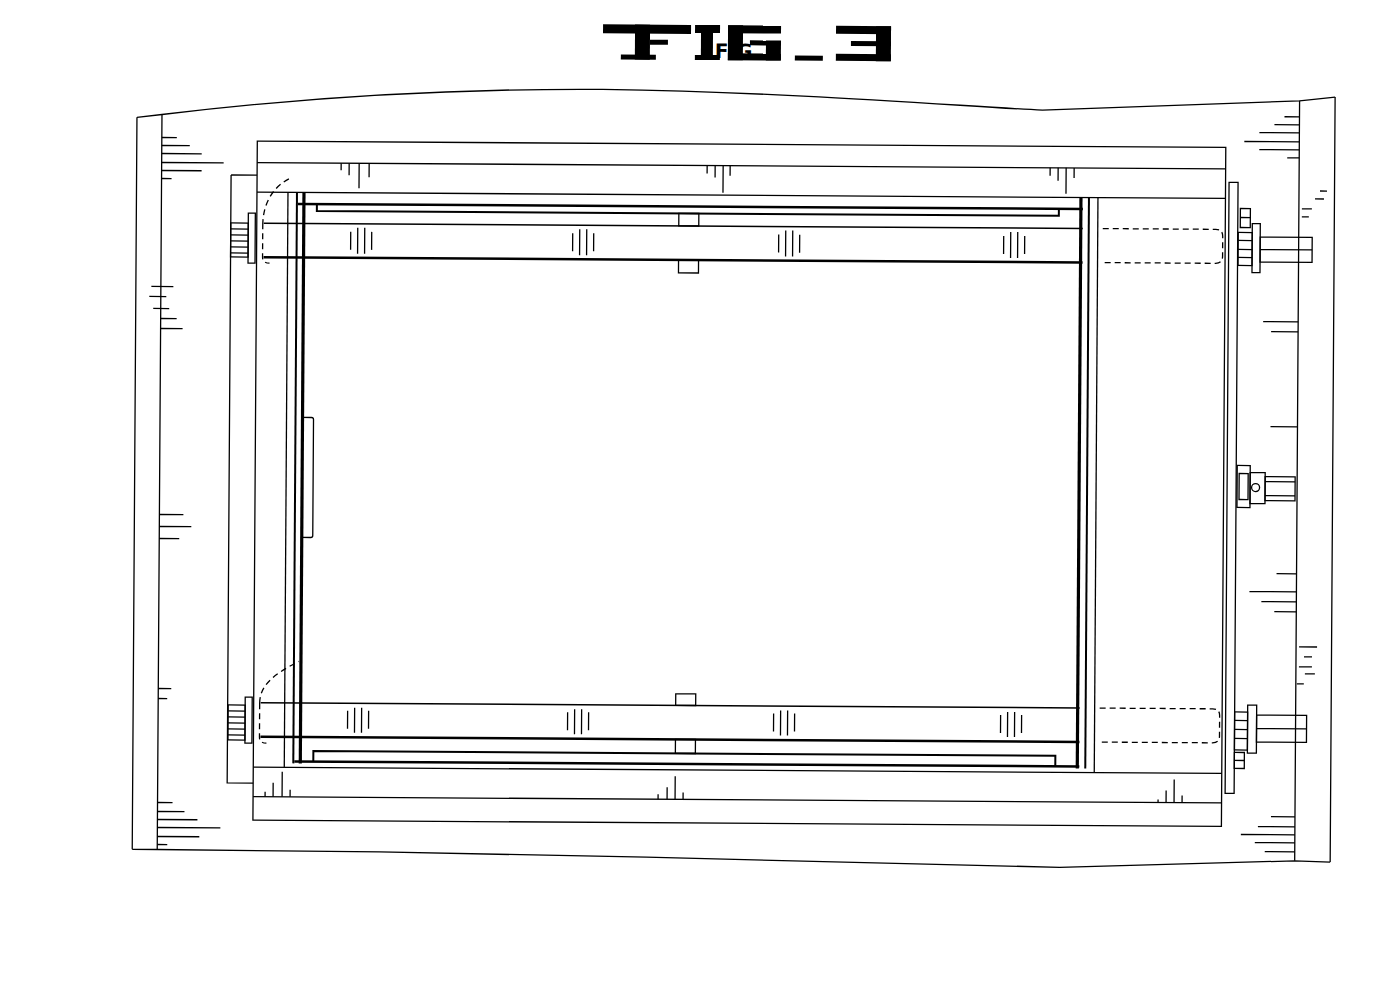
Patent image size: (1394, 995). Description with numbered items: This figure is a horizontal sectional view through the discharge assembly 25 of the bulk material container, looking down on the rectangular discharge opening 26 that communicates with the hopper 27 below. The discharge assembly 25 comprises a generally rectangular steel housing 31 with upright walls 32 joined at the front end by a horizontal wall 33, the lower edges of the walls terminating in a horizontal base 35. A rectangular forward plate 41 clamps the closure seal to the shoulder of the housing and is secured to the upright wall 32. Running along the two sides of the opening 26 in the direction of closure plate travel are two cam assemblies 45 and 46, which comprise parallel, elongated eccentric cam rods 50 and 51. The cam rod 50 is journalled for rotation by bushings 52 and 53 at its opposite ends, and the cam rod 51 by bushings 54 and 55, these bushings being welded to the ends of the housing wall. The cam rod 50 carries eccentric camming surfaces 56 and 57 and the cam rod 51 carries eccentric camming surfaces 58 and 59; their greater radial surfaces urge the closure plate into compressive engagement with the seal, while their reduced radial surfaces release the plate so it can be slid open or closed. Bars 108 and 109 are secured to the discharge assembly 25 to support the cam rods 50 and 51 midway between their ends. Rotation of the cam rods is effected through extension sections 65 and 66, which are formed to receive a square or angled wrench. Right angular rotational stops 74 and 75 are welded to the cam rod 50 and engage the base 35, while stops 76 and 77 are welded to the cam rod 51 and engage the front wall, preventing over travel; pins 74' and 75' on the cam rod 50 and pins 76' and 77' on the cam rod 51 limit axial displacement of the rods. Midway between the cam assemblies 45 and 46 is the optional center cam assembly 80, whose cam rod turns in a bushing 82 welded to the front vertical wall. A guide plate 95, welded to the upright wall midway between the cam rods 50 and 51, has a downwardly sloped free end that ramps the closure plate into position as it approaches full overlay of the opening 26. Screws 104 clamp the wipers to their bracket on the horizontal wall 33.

The discharge assembly 25 is at (1033, 832).
The discharge opening 26 is at (698, 493).
The hopper 27 is at (1334, 298).
The housing 31 is at (283, 300).
The upright walls 32 is at (1097, 377).
The horizontal wall 33 is at (1126, 203).
The base 35 is at (614, 823).
The forward plate 41 is at (1078, 368).
The cam assembly 45 is at (673, 275).
The cam assembly 46 is at (820, 541).
The cam rod 50 is at (673, 274).
The cam rod 51 is at (820, 529).
The bushing 52 is at (229, 238).
The bushing 53 is at (1246, 266).
The bushing 54 is at (229, 720).
The bushing 55 is at (1243, 708).
The eccentric camming surface 56 is at (478, 262).
The eccentric camming surface 57 is at (943, 266).
The eccentric camming surface 58 is at (470, 705).
The eccentric camming surface 59 is at (940, 705).
The extension section 65 is at (1311, 242).
The extension section 66 is at (1278, 740).
The rotational stop 74 is at (222, 226).
The pin 74' is at (295, 214).
The rotational stop 75 is at (1275, 234).
The pin 75' is at (1162, 263).
The rotational stop 76 is at (217, 703).
The pin 76' is at (304, 694).
The rotational stop 77 is at (1270, 715).
The pin 77' is at (1159, 705).
The center cam assembly 80 is at (1269, 465).
The bushing 82 is at (1241, 507).
The guide plate 95 is at (313, 420).
The screw 104 is at (1247, 207).
The bar 108 is at (682, 274).
The bar 109 is at (686, 694).